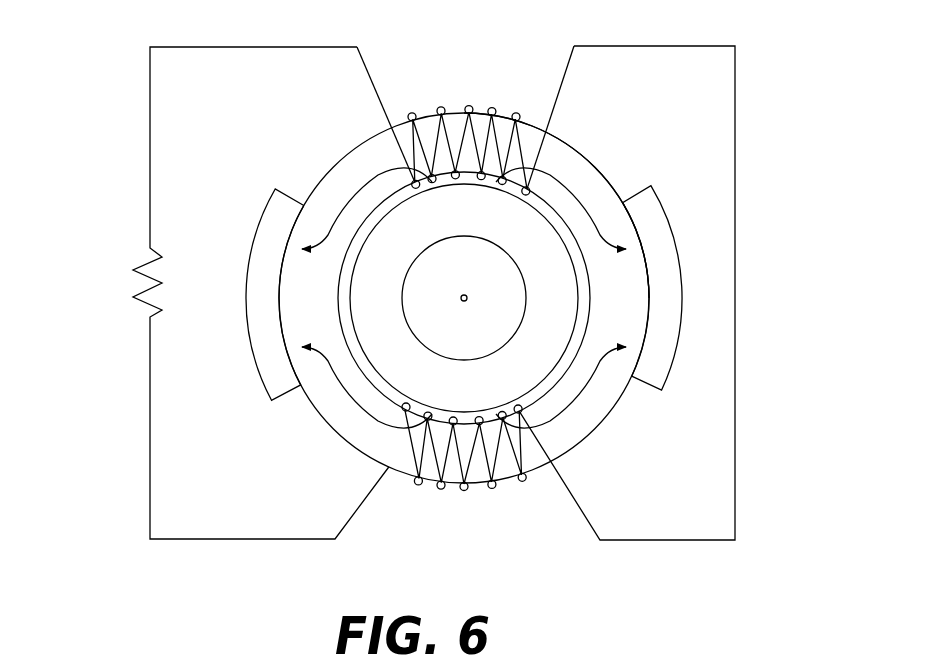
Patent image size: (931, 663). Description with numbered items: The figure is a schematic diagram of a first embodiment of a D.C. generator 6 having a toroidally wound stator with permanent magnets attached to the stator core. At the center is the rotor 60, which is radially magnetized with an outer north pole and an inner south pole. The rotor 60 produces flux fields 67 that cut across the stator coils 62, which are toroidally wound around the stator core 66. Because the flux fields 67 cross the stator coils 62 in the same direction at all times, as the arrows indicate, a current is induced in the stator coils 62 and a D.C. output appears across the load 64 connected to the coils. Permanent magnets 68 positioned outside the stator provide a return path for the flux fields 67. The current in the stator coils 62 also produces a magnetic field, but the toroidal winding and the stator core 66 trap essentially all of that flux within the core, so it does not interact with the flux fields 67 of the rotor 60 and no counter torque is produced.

The D.C. generator 6 is at (292, 156).
The rotor 60 is at (548, 236).
The stator coils 62 is at (460, 98).
The load 64 is at (126, 282).
The stator core 66 is at (588, 409).
The flux fields 67 is at (556, 172).
The permanent magnets 68 is at (263, 338).